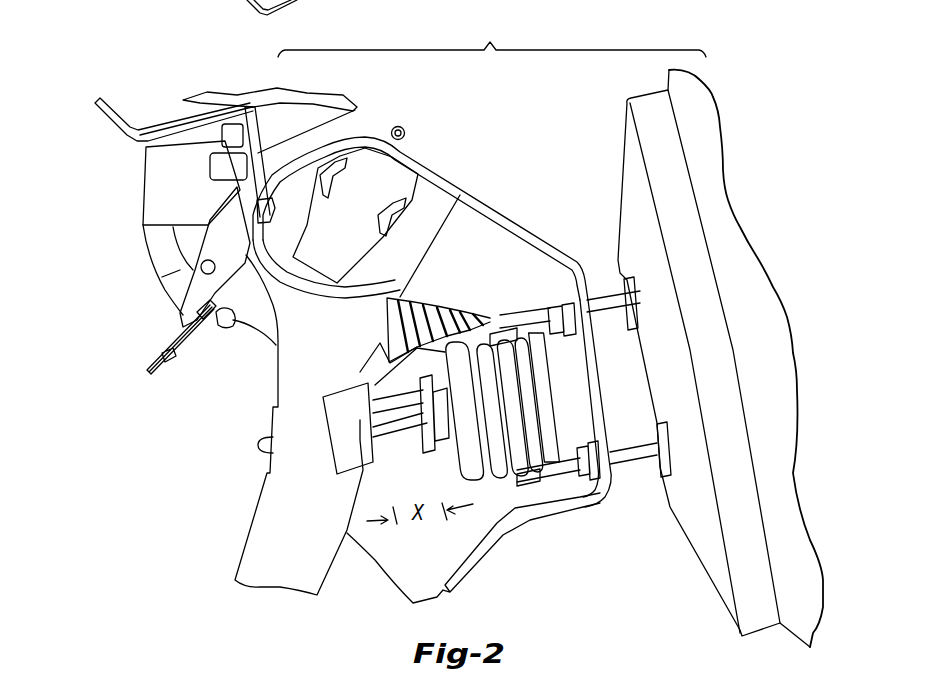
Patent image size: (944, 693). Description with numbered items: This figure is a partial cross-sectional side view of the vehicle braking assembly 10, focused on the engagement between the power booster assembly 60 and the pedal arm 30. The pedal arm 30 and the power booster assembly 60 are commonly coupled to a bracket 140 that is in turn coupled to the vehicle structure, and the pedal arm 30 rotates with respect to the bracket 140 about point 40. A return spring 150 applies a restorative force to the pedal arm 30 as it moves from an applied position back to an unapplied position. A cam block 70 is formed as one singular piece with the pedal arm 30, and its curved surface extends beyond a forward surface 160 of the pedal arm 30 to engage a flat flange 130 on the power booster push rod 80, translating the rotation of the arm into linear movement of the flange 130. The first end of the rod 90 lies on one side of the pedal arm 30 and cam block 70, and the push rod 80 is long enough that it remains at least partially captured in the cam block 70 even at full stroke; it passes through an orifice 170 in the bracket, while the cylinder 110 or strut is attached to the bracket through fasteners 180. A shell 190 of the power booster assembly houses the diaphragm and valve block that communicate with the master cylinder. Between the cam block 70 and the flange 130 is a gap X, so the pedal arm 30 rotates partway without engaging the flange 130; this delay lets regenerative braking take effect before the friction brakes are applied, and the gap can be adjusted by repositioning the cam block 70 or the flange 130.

The vehicle braking assembly 10 is at (492, 37).
The pedal arm 30 is at (255, 548).
The point 40 is at (387, 178).
The power booster assembly 60 is at (670, 523).
The cam block 70 is at (337, 443).
The power booster push rod 80 is at (390, 427).
The first end of rod 90 is at (258, 445).
The cylinder 110 is at (542, 350).
The flange 130 is at (442, 452).
The bracket 140 is at (480, 227).
The return spring 150 is at (432, 317).
The forward surface 160 is at (350, 572).
The orifice 170 is at (583, 383).
The fasteners 180 is at (563, 317).
The shell 190 is at (633, 173).